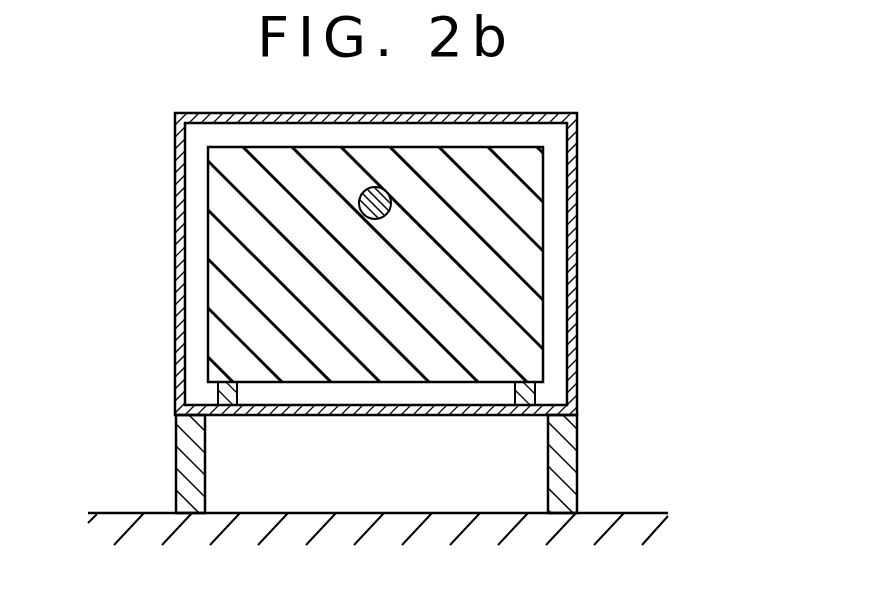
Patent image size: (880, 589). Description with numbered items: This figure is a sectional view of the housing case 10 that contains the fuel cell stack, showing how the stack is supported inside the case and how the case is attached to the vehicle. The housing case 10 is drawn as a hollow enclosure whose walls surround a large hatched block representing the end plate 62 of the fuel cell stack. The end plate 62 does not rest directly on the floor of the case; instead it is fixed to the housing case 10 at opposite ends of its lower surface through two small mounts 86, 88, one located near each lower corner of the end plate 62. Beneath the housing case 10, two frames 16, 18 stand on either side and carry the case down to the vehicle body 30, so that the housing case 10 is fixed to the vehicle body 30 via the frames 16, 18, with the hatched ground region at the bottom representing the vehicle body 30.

The housing case 10 is at (577, 270).
The end plate 62 is at (543, 208).
The mount 88 is at (218, 393).
The mount 86 is at (535, 393).
The frame 18 is at (177, 472).
The frame 16 is at (577, 460).
The vehicle body 30 is at (617, 513).